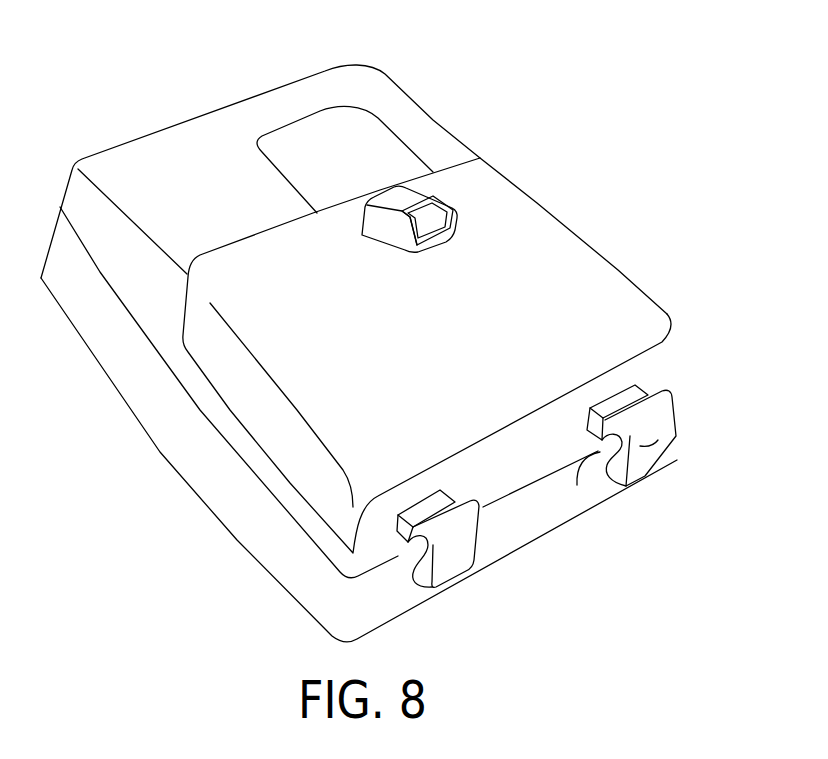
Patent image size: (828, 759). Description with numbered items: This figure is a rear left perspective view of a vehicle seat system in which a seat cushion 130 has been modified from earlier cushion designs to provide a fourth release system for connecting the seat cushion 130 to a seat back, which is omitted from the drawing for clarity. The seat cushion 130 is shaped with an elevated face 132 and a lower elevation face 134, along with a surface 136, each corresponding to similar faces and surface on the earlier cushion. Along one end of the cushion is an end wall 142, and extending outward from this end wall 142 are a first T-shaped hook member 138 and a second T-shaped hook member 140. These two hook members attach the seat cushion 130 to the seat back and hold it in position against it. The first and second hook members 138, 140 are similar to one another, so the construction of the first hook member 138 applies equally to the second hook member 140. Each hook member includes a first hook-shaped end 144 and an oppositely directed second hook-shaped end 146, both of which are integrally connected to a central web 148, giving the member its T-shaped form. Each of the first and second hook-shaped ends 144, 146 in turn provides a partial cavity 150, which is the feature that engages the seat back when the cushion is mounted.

The seat cushion 130 is at (592, 145).
The elevated face 132 is at (617, 277).
The lower elevation face 134 is at (433, 122).
The surface 136 is at (160, 452).
The first T-shaped hook member 138 is at (658, 433).
The second T-shaped hook member 140 is at (457, 557).
The end wall 142 is at (528, 468).
The first hook-shaped end 144 is at (653, 407).
The second hook-shaped end 146 is at (625, 477).
The central web 148 is at (633, 453).
The partial cavity 150 is at (577, 485).